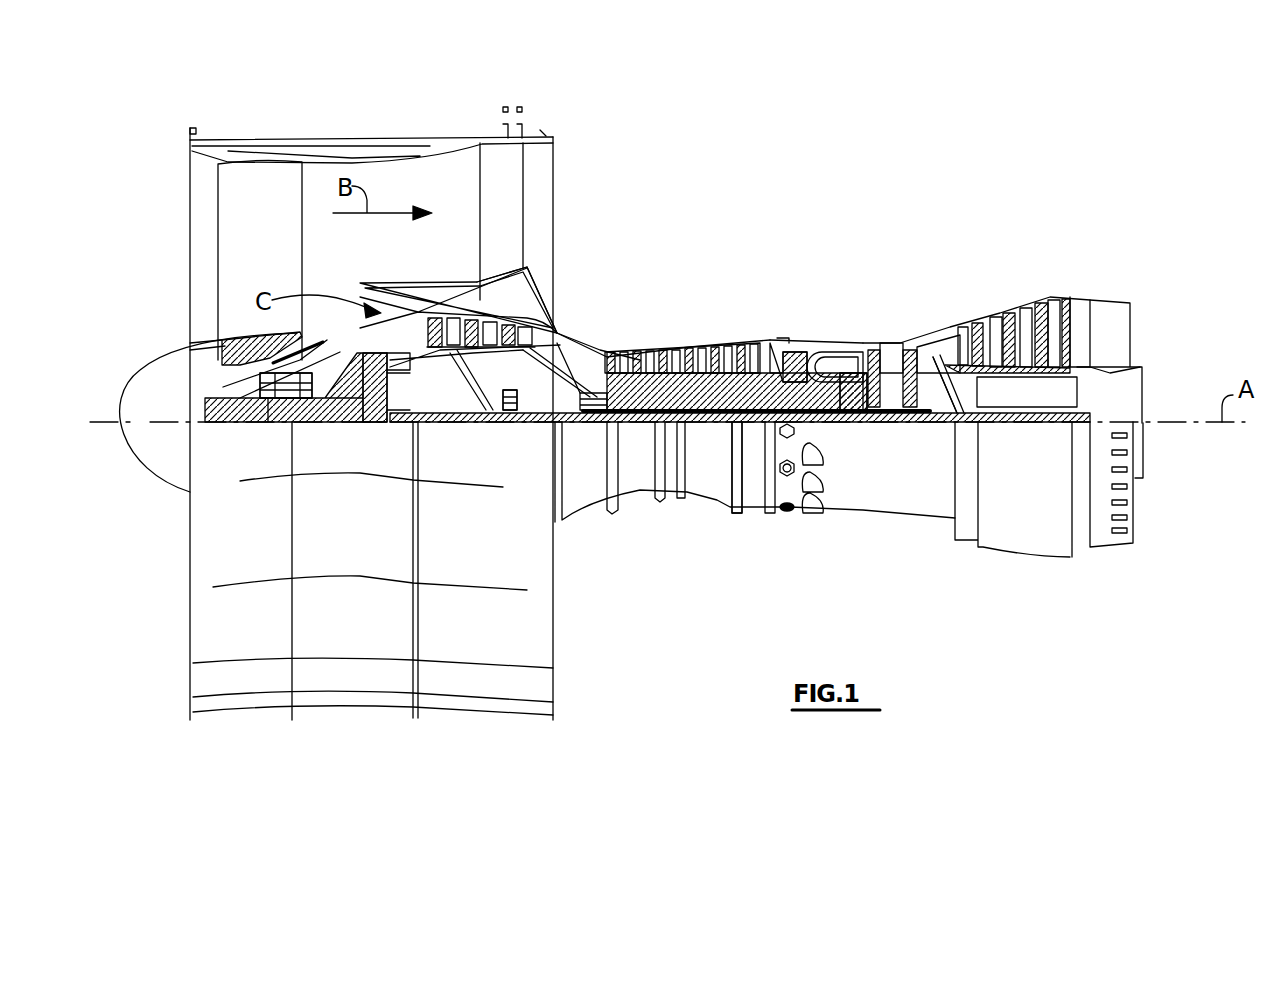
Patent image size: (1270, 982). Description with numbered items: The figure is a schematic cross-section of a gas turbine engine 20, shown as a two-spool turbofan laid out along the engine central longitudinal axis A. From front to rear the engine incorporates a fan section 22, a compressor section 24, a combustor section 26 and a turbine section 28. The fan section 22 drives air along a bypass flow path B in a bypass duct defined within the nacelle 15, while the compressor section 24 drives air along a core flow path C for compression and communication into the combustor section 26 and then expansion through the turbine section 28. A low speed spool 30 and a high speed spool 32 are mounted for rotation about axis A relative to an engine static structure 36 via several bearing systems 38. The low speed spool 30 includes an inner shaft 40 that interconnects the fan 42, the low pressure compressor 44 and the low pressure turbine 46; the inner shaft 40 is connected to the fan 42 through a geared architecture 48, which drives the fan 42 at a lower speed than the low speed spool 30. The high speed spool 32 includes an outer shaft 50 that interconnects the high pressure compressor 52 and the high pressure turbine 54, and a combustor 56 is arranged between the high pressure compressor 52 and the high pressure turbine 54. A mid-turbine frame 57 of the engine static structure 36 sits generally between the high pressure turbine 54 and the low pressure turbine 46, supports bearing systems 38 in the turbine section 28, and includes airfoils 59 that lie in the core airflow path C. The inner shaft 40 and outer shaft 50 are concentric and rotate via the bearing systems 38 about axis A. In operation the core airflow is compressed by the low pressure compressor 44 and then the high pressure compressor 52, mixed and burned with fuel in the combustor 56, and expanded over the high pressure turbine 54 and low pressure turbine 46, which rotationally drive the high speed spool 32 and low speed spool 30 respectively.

The nacelle 15 is at (420, 140).
The gas turbine engine 20 is at (828, 191).
The fan section 22 is at (400, 112).
The compressor section 24 is at (412, 261).
The combustor section 26 is at (863, 261).
The turbine section 28 is at (1083, 261).
The low speed spool 30 is at (712, 422).
The high speed spool 32 is at (753, 410).
The engine static structure 36 is at (751, 504).
The bearing systems 38 is at (266, 422).
The inner shaft 40 is at (572, 425).
The fan 42 is at (275, 268).
The low pressure compressor 44 is at (487, 320).
The low pressure turbine 46 is at (1023, 300).
The geared architecture 48 is at (376, 422).
The outer shaft 50 is at (840, 422).
The high pressure compressor 52 is at (687, 397).
The high pressure turbine 54 is at (890, 343).
The combustor 56 is at (828, 363).
The mid-turbine frame 57 is at (933, 333).
The airfoils 59 is at (975, 425).